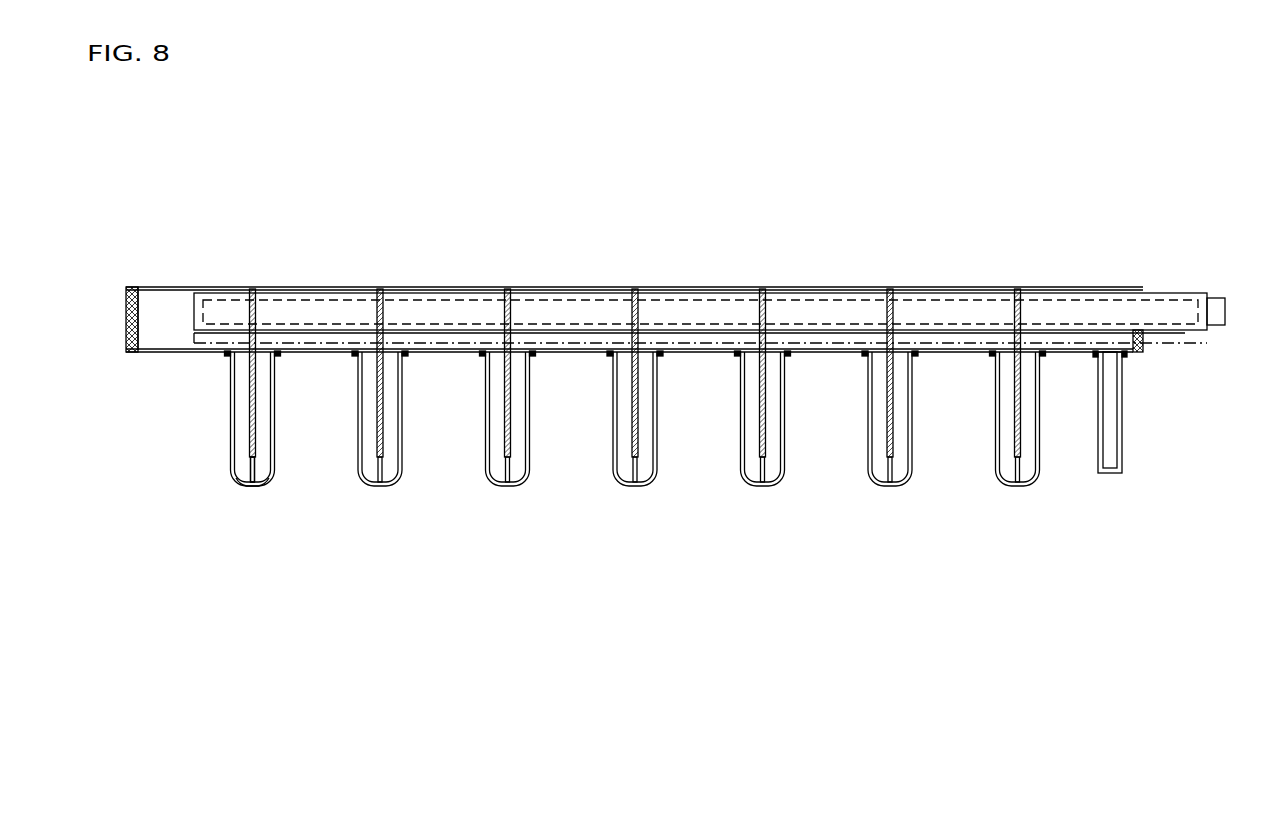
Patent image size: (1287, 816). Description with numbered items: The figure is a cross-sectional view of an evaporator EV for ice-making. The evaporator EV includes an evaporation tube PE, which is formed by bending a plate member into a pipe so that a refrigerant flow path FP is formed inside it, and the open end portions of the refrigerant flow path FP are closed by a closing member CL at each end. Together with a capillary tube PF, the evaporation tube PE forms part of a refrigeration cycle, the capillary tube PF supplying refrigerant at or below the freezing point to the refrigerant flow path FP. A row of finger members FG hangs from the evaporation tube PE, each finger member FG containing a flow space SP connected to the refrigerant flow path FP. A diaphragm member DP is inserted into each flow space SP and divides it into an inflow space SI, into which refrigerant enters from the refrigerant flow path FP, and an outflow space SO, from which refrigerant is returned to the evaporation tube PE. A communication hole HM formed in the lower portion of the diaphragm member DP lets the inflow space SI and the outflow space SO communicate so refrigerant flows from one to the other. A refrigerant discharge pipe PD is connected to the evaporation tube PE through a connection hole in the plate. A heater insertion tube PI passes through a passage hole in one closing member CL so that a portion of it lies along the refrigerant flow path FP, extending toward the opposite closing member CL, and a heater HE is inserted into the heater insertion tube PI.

The evaporator EV is at (624, 173).
The refrigerant flow path FP is at (164, 318).
The evaporation tube PE is at (987, 286).
The heater insertion tube PI is at (1157, 292).
The capillary tube PF is at (1182, 329).
The heater HE is at (1216, 297).
The closing member CL is at (126, 348).
The diaphragm member DP is at (247, 403).
The communication hole HM is at (250, 468).
The finger member FG is at (237, 489).
The inflow space SI is at (241, 418).
The outflow space SO is at (259, 447).
The flow space SP is at (333, 472).
The refrigerant discharge pipe PD is at (1124, 428).